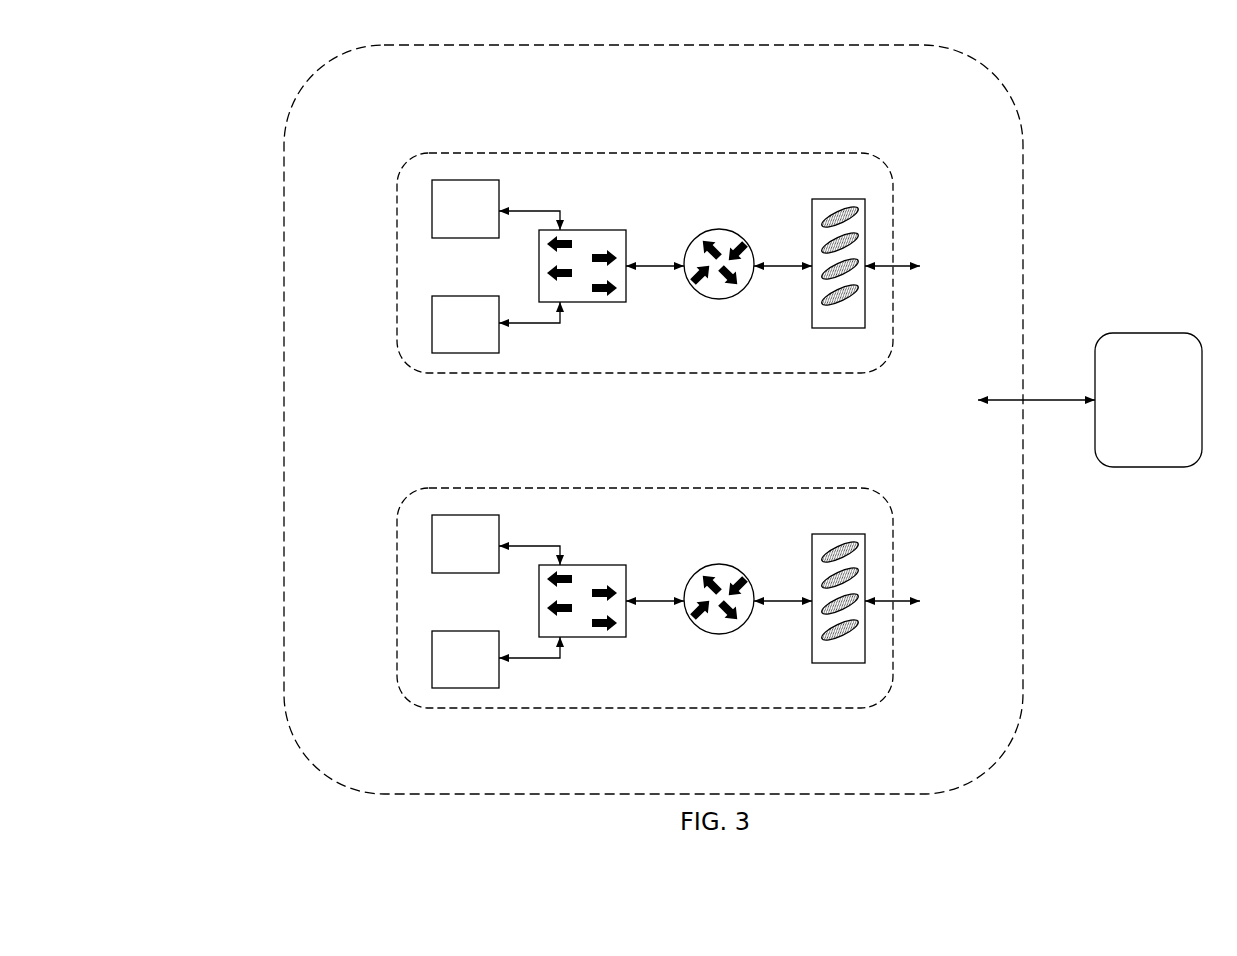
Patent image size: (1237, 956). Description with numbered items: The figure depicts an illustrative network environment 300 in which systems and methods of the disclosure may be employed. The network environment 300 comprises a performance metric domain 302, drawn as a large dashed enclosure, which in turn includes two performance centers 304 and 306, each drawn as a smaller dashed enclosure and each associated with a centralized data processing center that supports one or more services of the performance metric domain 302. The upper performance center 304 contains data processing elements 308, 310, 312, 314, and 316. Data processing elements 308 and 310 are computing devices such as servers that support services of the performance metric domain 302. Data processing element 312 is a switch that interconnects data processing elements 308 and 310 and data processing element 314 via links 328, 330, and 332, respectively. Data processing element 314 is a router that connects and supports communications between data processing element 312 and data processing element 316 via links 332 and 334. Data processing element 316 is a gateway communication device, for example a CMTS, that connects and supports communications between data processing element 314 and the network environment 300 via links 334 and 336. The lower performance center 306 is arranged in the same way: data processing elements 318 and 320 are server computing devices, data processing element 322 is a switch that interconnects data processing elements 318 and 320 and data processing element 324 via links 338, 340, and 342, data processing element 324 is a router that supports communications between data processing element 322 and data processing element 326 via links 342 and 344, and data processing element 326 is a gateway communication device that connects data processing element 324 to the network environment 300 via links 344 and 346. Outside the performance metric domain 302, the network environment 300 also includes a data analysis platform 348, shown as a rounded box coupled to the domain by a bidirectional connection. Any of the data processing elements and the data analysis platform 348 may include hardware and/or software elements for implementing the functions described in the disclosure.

The network environment 300 is at (1142, 150).
The performance metric domain 302 is at (284, 189).
The performance center 304 is at (893, 203).
The performance center 306 is at (681, 575).
The data processing element 308 is at (432, 199).
The data processing element 310 is at (432, 319).
The data processing element 312 is at (598, 230).
The data processing element 314 is at (718, 228).
The data processing element 316 is at (812, 224).
The data processing element 318 is at (419, 513).
The data processing element 320 is at (419, 629).
The data processing element 322 is at (554, 526).
The data processing element 324 is at (679, 539).
The data processing element 326 is at (803, 544).
The link 328 is at (520, 212).
The link 330 is at (532, 324).
The link 332 is at (655, 268).
The link 334 is at (793, 268).
The link 336 is at (882, 268).
The link 338 is at (482, 505).
The link 340 is at (481, 695).
The link 342 is at (631, 642).
The link 344 is at (757, 642).
The link 346 is at (930, 632).
The data analysis platform 348 is at (1175, 333).